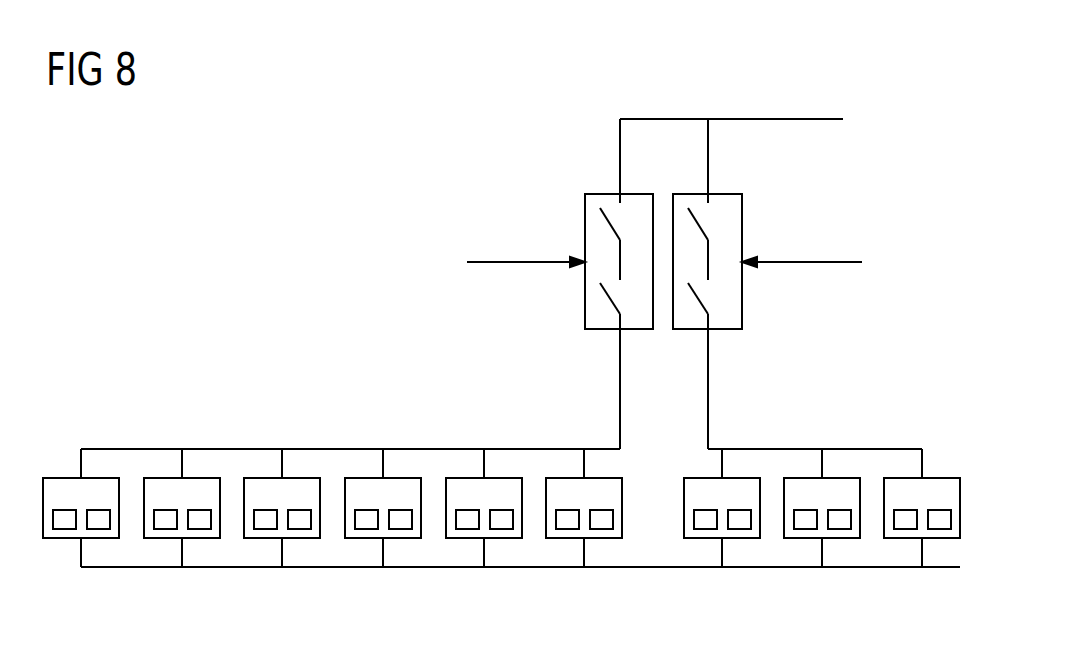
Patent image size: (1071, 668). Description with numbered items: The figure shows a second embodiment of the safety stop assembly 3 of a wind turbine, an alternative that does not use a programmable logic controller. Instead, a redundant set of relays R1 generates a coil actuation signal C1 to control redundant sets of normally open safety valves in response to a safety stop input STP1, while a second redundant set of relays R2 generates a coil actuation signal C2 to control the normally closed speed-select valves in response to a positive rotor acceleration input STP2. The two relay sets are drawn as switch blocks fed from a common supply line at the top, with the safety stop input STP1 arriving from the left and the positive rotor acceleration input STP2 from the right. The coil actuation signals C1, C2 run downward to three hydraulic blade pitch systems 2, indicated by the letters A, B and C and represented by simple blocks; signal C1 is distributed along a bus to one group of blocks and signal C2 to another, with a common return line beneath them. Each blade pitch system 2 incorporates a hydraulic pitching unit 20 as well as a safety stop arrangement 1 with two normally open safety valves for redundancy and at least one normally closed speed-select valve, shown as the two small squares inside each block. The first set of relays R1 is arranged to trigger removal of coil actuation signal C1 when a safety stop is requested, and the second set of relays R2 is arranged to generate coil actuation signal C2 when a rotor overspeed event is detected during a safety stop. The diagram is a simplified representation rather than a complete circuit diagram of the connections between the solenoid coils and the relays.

The safety stop arrangement 1 is at (65, 538).
The blade pitch system 2 is at (102, 478).
The pitch unit 20 is at (98, 538).
The safety stop assembly 3 is at (893, 123).
The first set of relays R1 is at (605, 193).
The second set of relays R2 is at (692, 193).
The coil actuation signal C1 is at (620, 355).
The coil actuation signal C2 is at (708, 355).
The safety stop input STP1 is at (490, 258).
The positive rotor acceleration input STP2 is at (812, 258).